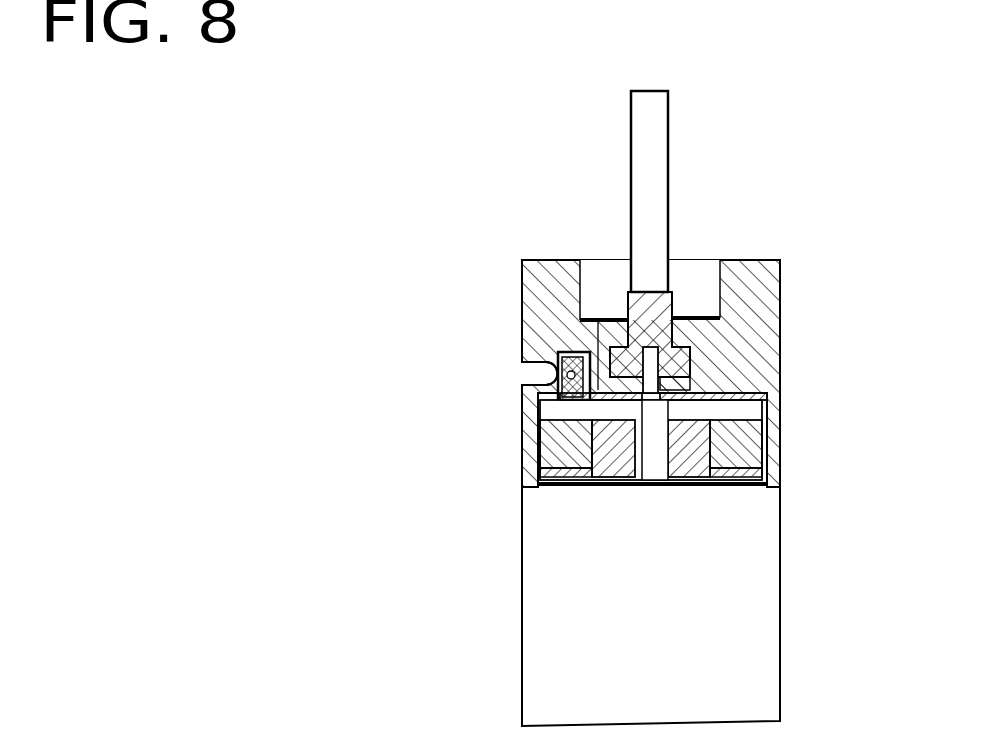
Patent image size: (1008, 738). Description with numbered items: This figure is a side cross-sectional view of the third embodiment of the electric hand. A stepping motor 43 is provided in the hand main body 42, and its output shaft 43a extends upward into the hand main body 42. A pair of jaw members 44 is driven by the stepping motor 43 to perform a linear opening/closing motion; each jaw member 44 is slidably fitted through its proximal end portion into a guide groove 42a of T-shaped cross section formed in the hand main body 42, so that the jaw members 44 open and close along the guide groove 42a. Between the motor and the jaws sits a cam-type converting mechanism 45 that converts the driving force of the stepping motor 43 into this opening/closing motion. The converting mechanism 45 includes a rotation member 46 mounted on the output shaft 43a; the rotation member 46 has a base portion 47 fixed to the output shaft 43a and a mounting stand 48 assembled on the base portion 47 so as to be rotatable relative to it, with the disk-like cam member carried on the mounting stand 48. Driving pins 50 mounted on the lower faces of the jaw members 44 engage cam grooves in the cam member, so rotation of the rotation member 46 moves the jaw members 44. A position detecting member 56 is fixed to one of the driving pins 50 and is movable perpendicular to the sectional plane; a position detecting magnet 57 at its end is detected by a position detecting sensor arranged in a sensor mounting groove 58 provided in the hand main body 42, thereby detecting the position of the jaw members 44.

The hand main body 42 is at (773, 288).
The guide groove 42a is at (690, 372).
The stepping motor 43 is at (747, 507).
The output shaft 43a is at (658, 447).
The jaw member 44 is at (657, 142).
The converting mechanism 45 is at (470, 478).
The rotation member 46 is at (573, 475).
The base portion 47 is at (617, 475).
The mounting stand 48 is at (560, 437).
The driving pin 50 is at (690, 363).
The position detecting member 56 is at (598, 325).
The position detecting magnet 57 is at (592, 382).
The sensor mounting groove 58 is at (545, 376).